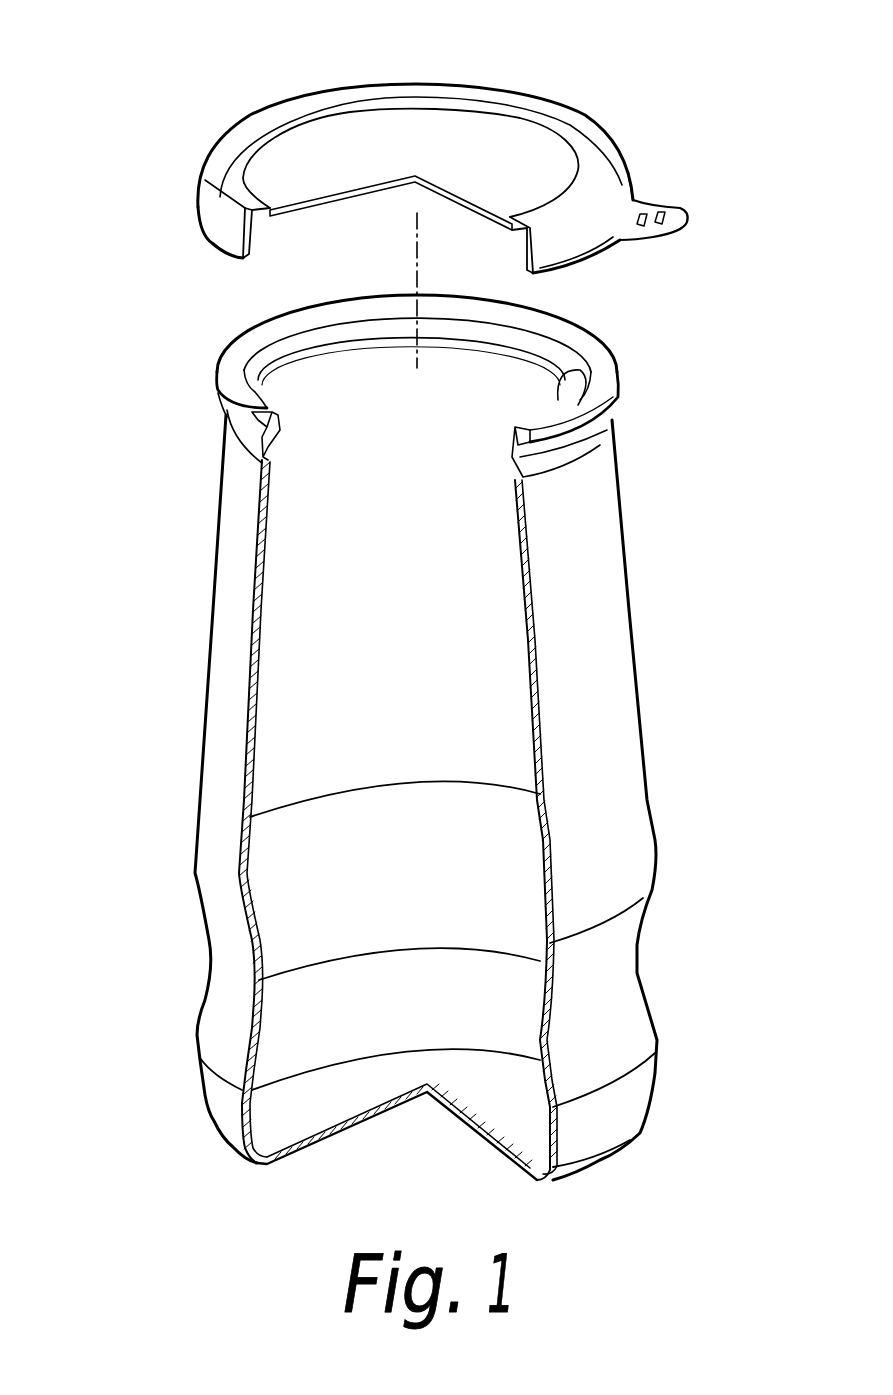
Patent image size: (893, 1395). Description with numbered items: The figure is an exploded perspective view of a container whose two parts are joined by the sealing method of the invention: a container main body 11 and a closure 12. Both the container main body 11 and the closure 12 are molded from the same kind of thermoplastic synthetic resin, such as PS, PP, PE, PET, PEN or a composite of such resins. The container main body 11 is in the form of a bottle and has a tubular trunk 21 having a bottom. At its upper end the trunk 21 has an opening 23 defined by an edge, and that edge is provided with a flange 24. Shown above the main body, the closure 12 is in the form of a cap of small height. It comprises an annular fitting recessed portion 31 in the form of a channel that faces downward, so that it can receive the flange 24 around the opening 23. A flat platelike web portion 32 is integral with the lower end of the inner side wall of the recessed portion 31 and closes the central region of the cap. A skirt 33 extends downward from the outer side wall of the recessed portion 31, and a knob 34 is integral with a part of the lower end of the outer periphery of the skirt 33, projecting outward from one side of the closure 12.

The container main body 11 is at (191, 782).
The closure 12 is at (196, 139).
The tubular trunk 21 is at (225, 633).
The opening 23 is at (577, 370).
The flange 24 is at (233, 373).
The annular fitting recessed portion 31 is at (258, 222).
The flat platelike web portion 32 is at (390, 140).
The skirt 33 is at (220, 212).
The knob 34 is at (670, 216).